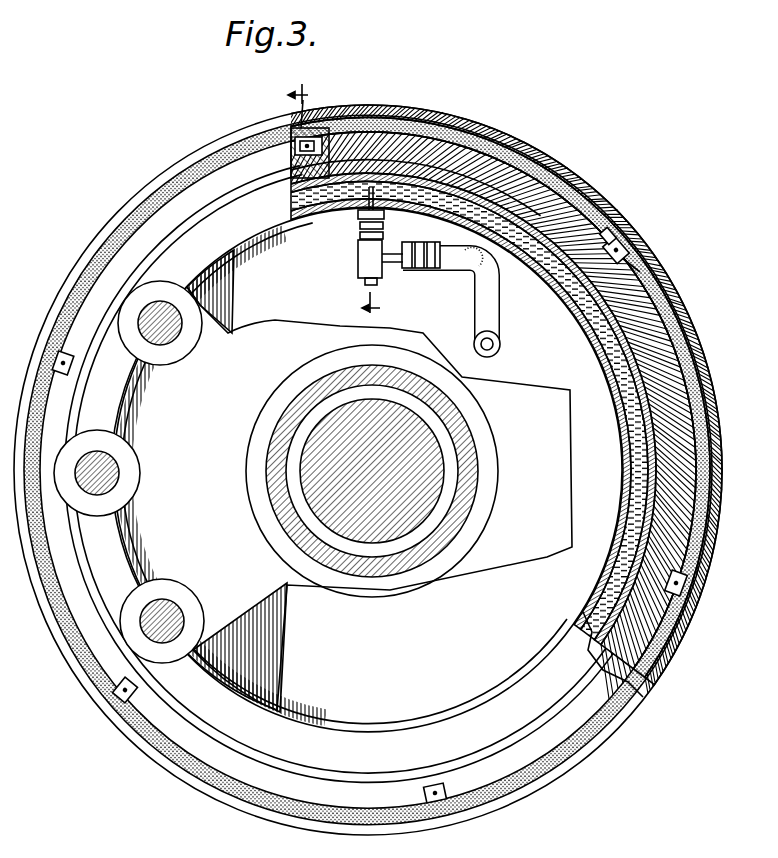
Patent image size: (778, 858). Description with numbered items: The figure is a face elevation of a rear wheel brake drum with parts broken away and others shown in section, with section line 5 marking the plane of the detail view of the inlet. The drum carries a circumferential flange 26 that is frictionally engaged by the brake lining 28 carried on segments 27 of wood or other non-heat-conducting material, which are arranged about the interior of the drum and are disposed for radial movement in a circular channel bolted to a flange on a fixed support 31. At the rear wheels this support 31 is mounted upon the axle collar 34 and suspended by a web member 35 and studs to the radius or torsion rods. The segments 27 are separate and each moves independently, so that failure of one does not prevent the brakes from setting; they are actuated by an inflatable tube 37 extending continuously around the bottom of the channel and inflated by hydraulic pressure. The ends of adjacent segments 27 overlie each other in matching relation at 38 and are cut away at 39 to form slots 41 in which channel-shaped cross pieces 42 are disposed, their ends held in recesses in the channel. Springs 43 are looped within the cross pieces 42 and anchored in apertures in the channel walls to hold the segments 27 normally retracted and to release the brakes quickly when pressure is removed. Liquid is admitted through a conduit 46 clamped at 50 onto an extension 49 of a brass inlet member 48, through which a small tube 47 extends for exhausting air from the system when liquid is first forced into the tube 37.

The section line 5- 5 is at (338, 191).
The circumferential flange 26 is at (590, 200).
The segments 27 is at (533, 193).
The brake lining 28 is at (490, 133).
The fixed support 31 is at (603, 468).
The axle collar 34 is at (410, 560).
The web member 35 is at (268, 305).
The inflatable tube 37 is at (603, 341).
The overlapping ends of adjacent segments 38 is at (648, 333).
The cut-away portions of segment ends 39 is at (608, 232).
The slots 41 is at (615, 240).
The channel-shaped cross pieces 42 is at (630, 265).
The springs 43 is at (285, 150).
The conduit 46 is at (472, 300).
The small tube 47 is at (355, 222).
The inlet member 48 is at (360, 258).
The extension 49 is at (395, 248).
The clamp 50 is at (425, 266).